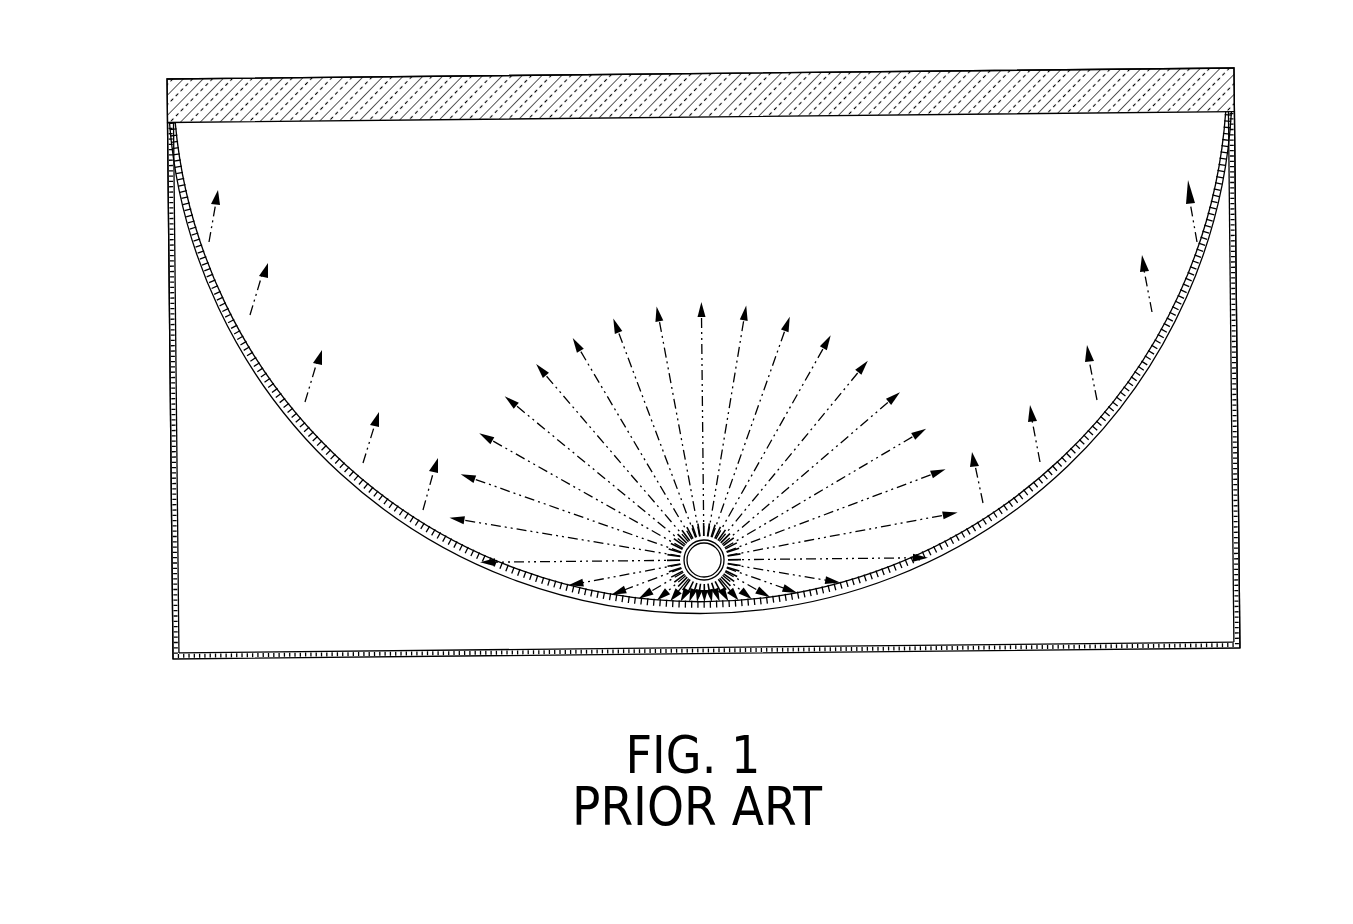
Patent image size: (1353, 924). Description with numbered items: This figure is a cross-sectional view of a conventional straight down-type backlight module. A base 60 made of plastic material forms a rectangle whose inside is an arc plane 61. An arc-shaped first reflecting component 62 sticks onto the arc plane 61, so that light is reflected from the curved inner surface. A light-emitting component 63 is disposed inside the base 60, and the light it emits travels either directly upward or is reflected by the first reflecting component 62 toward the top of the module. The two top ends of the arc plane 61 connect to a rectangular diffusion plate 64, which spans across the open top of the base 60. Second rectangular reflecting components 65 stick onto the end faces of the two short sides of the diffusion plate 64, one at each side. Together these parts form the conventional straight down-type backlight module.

The base 60 is at (978, 606).
The arc plane 61 is at (702, 367).
The first reflecting component 62 is at (1075, 453).
The light-emitting component 63 is at (705, 560).
The diffusion plate 64 is at (188, 100).
The second reflecting component 65 is at (167, 103).